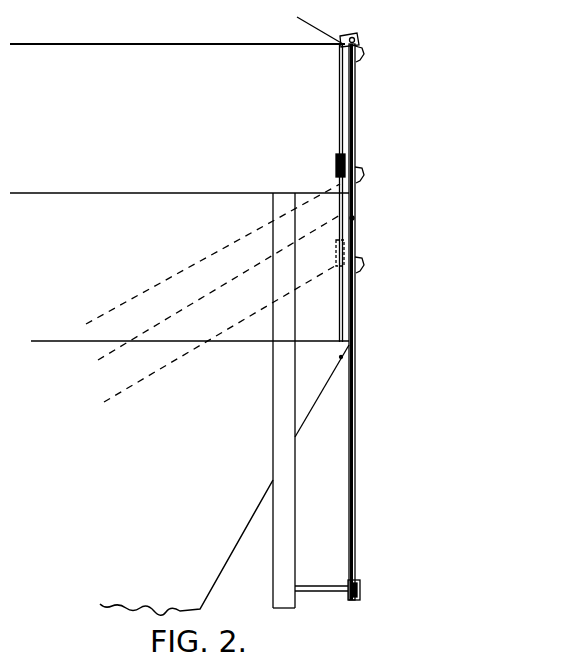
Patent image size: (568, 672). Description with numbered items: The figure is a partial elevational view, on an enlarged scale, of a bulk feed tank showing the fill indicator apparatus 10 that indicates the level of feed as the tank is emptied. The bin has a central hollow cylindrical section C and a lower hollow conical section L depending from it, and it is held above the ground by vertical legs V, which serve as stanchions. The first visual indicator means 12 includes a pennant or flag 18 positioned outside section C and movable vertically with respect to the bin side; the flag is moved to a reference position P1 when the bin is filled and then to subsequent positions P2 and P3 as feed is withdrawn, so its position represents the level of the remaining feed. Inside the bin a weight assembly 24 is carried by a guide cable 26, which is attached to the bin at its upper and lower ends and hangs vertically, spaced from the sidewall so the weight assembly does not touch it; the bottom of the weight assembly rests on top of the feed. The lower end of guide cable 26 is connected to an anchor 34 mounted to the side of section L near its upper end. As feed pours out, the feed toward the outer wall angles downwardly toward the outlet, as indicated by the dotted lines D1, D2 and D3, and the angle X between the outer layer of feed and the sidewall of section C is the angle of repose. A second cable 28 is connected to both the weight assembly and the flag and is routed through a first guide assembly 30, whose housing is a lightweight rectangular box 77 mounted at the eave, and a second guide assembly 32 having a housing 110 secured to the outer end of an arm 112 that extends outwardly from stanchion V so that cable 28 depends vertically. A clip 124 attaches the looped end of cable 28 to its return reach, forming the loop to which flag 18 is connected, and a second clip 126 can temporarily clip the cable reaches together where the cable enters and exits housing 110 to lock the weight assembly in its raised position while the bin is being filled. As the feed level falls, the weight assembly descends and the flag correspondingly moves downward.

The fill indicator apparatus 10 is at (216, 122).
The first visual indicator means 12 is at (301, 147).
The pennant or flag 18 is at (361, 56).
The weight assembly 24 is at (334, 169).
The guide cable 26 is at (333, 125).
The second cable 28 is at (357, 127).
The first guide assembly 30 is at (354, 32).
The second guide assembly 32 is at (404, 598).
The anchor 34 is at (339, 359).
The rectangular box 77 is at (351, 33).
The housing 110 is at (354, 587).
The arm 112 is at (338, 584).
The clip 124 is at (356, 218).
The second clip 126 is at (395, 541).
The reference position P1 is at (386, 56).
The subsequent flag position P2 is at (397, 171).
The subsequent flag position P3 is at (397, 257).
The angle of repose X is at (350, 215).
The central hollow cylindrical section C is at (358, 318).
The lower hollow conical section L is at (302, 434).
The vertical leg V is at (271, 559).
The dotted line D1 is at (176, 272).
The dotted line D2 is at (183, 313).
The dotted line D3 is at (183, 355).